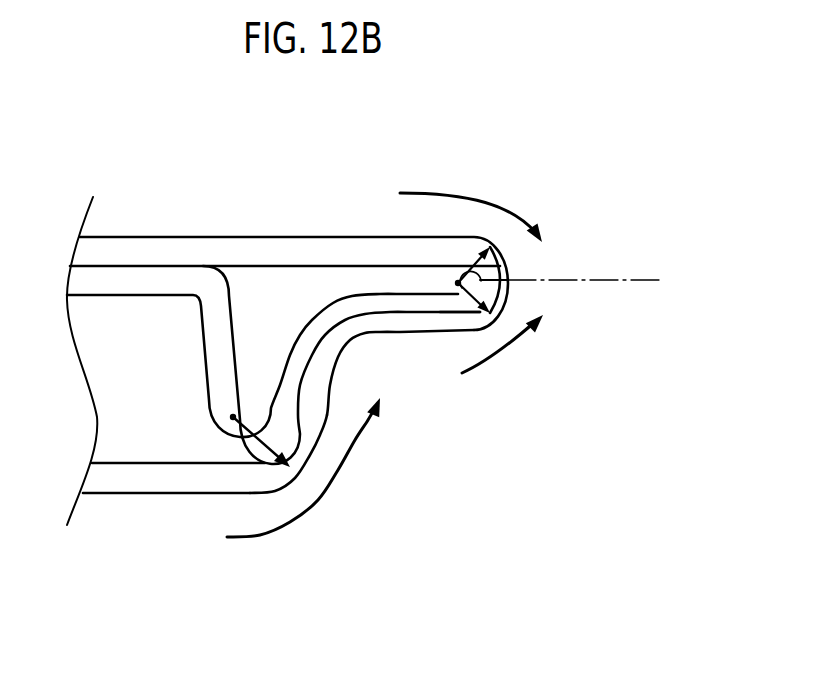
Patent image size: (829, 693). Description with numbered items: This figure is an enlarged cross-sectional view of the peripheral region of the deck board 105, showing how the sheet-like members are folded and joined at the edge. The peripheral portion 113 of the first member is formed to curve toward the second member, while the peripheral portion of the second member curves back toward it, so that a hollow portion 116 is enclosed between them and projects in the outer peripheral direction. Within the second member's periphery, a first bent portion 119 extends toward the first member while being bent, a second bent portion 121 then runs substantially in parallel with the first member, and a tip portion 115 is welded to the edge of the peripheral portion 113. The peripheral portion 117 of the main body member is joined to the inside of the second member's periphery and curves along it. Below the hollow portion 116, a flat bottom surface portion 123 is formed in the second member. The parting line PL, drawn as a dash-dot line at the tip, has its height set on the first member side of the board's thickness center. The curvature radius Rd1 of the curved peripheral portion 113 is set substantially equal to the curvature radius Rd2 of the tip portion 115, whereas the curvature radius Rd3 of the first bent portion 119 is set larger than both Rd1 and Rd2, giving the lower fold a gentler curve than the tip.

The deck board 105 is at (305, 212).
The hollow portion 116 is at (427, 278).
The peripheral portion of the first member 113 is at (508, 268).
The tip portion 115 is at (508, 294).
The parting line PL is at (571, 263).
The curvature radius of the peripheral portion of the first member Rd1 is at (458, 283).
The curvature radius of the tip portion Rd2 is at (458, 290).
The curvature radius of the first bent portion Rd3 is at (250, 443).
The second bent portion 121 is at (347, 337).
The bottom surface portion 123 is at (403, 330).
The peripheral portion of the main body member 117 is at (465, 299).
The first bent portion 119 is at (302, 450).